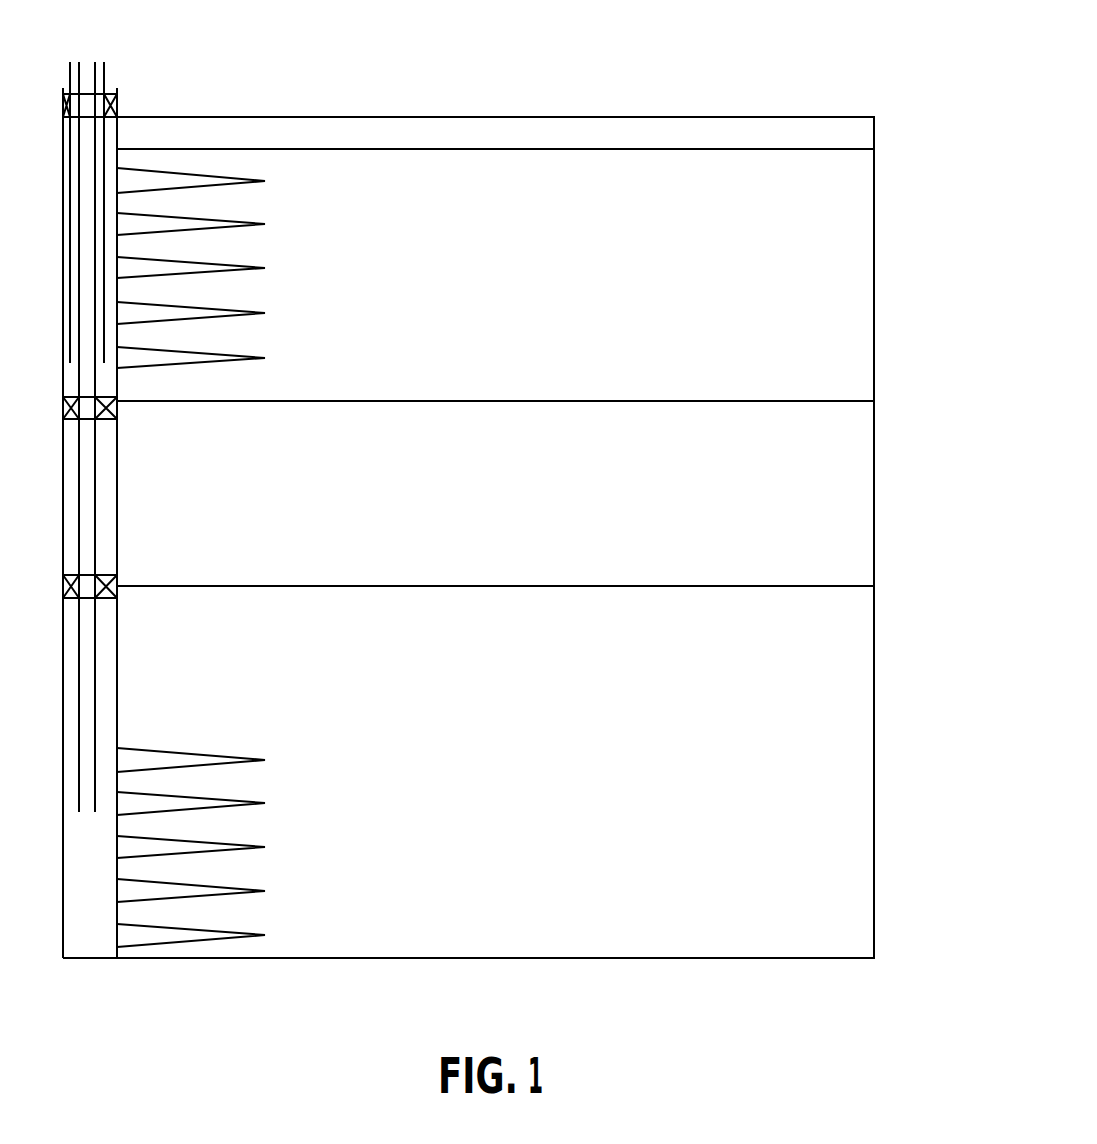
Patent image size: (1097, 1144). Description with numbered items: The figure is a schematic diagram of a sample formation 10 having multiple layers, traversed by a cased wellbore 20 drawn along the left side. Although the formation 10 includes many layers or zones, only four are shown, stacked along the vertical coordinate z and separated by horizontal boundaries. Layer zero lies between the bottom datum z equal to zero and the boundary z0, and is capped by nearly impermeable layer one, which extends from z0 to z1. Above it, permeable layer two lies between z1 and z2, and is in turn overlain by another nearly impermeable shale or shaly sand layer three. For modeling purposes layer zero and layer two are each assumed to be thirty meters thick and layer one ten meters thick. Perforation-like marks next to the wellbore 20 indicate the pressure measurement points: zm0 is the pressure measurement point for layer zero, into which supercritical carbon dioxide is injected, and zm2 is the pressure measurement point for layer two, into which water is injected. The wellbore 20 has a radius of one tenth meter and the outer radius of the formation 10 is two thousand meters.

The formation 10 is at (530, 489).
The cased wellbore 20 is at (119, 97).
The upper boundary of layer 2 z2 is at (525, 151).
The boundary between layer 1 and layer 2 z1 is at (525, 402).
The boundary between layer 0 and layer 1 z0 is at (525, 583).
The pressure measurement point for layer 2 zm2 is at (191, 268).
The pressure measurement point for layer 0 zm0 is at (191, 847).